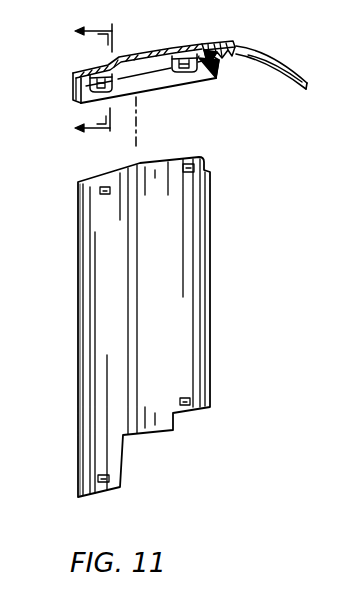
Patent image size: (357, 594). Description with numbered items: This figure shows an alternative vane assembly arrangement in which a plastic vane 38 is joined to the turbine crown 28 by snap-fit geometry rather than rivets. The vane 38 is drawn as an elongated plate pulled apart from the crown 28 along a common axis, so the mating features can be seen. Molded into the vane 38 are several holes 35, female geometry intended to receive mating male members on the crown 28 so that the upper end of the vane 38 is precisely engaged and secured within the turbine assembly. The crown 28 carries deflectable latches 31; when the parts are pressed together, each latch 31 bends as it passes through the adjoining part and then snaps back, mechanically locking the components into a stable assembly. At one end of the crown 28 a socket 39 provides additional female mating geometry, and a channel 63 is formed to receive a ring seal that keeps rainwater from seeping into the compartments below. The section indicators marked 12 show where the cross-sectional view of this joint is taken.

The section line 12- 12 is at (77, 79).
The turbine crown 28 is at (155, 48).
The deflectable latch 31 is at (75, 89).
The holes 35 is at (99, 193).
The vanes 38 is at (205, 260).
The sockets 39 is at (231, 44).
The channel 63 is at (207, 44).